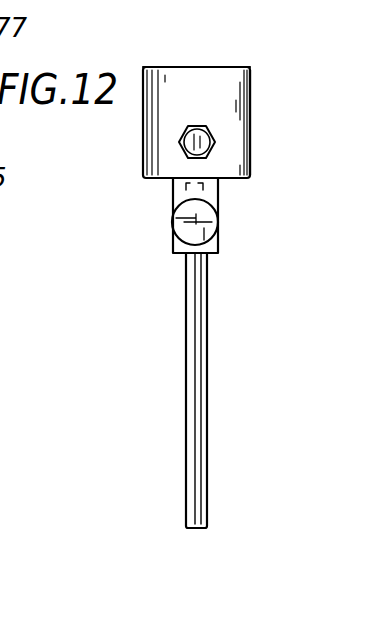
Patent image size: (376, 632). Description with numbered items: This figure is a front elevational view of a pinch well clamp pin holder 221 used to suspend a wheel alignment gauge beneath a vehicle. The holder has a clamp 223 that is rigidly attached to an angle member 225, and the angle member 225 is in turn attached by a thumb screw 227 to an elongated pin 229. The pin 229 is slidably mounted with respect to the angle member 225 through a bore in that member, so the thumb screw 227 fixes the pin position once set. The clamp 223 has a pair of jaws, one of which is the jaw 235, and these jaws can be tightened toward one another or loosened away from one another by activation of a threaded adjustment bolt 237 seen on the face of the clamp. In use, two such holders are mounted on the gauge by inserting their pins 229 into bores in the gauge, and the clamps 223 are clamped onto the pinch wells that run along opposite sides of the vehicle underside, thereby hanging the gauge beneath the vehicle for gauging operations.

The pinch well clamp pin holder 221 is at (253, 125).
The clamp 223 is at (199, 67).
The angle member 225 is at (218, 199).
The thumb screw 227 is at (218, 226).
The pin 229 is at (188, 349).
The jaw 235 is at (228, 148).
The threaded adjustment bolt 237 is at (178, 148).